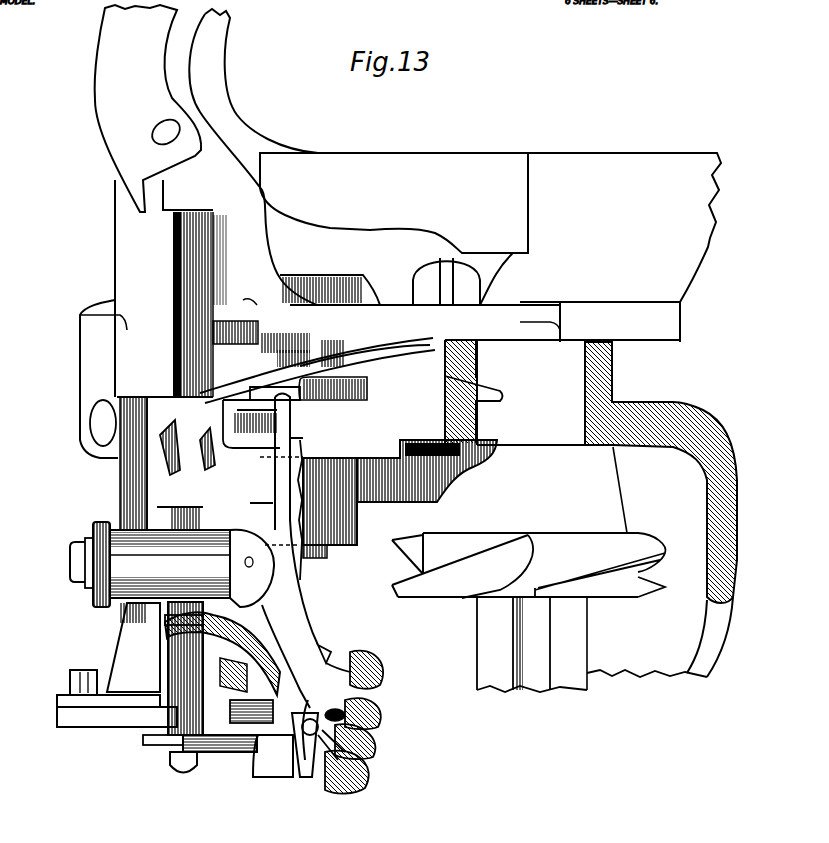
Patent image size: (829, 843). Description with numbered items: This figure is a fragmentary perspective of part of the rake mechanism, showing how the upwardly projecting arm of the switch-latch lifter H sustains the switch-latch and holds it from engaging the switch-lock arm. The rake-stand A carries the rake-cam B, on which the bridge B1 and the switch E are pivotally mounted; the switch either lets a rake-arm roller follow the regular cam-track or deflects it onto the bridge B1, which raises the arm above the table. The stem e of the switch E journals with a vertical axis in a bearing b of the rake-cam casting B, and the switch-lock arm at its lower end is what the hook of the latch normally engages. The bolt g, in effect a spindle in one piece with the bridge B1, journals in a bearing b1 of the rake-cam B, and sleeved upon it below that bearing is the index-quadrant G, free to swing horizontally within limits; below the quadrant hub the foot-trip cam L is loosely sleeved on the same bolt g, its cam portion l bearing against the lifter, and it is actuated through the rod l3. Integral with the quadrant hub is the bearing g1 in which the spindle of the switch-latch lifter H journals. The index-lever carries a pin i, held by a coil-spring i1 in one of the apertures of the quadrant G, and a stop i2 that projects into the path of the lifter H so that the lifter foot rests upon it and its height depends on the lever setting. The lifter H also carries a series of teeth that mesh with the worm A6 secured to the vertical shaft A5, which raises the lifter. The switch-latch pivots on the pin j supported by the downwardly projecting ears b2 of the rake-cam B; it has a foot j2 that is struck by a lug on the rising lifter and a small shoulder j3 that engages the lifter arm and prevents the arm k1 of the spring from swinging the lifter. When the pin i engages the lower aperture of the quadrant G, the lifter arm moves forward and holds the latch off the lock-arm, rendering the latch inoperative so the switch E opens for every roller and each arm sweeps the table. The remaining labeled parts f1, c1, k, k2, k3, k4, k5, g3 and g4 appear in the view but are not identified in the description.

The bridge B1 is at (206, 155).
The switch E is at (394, 203).
The rake-cam B is at (583, 247).
The bearing b is at (318, 320).
The bearing b1 is at (171, 288).
The downwardly-projecting ears b2 is at (80, 385).
The pin j is at (92, 426).
The foot j2 is at (372, 392).
The shoulder j3 is at (333, 404).
The post f1 is at (463, 391).
The rake-stand A is at (661, 516).
The vertical shaft A5 is at (532, 645).
The worm A6 is at (528, 565).
The bearing c1 is at (412, 500).
The stem e is at (328, 560).
The bar k2 is at (215, 412).
The bracket g3 is at (225, 426).
The spring g4 is at (216, 452).
The rod k5 is at (266, 508).
The shaft k is at (70, 557).
The bearing g1 is at (112, 600).
The cam portion l is at (272, 630).
The notch k4 is at (334, 649).
The foot-trip cam L is at (177, 668).
The rod l3 is at (120, 712).
The coil-spring i1 is at (70, 693).
The bolt g is at (157, 745).
The switch-latch lifter H is at (335, 702).
The teeth k3 is at (360, 775).
The arm k1 is at (385, 700).
The pin i is at (300, 765).
The stop i2 is at (327, 765).
The index-quadrant G is at (280, 734).